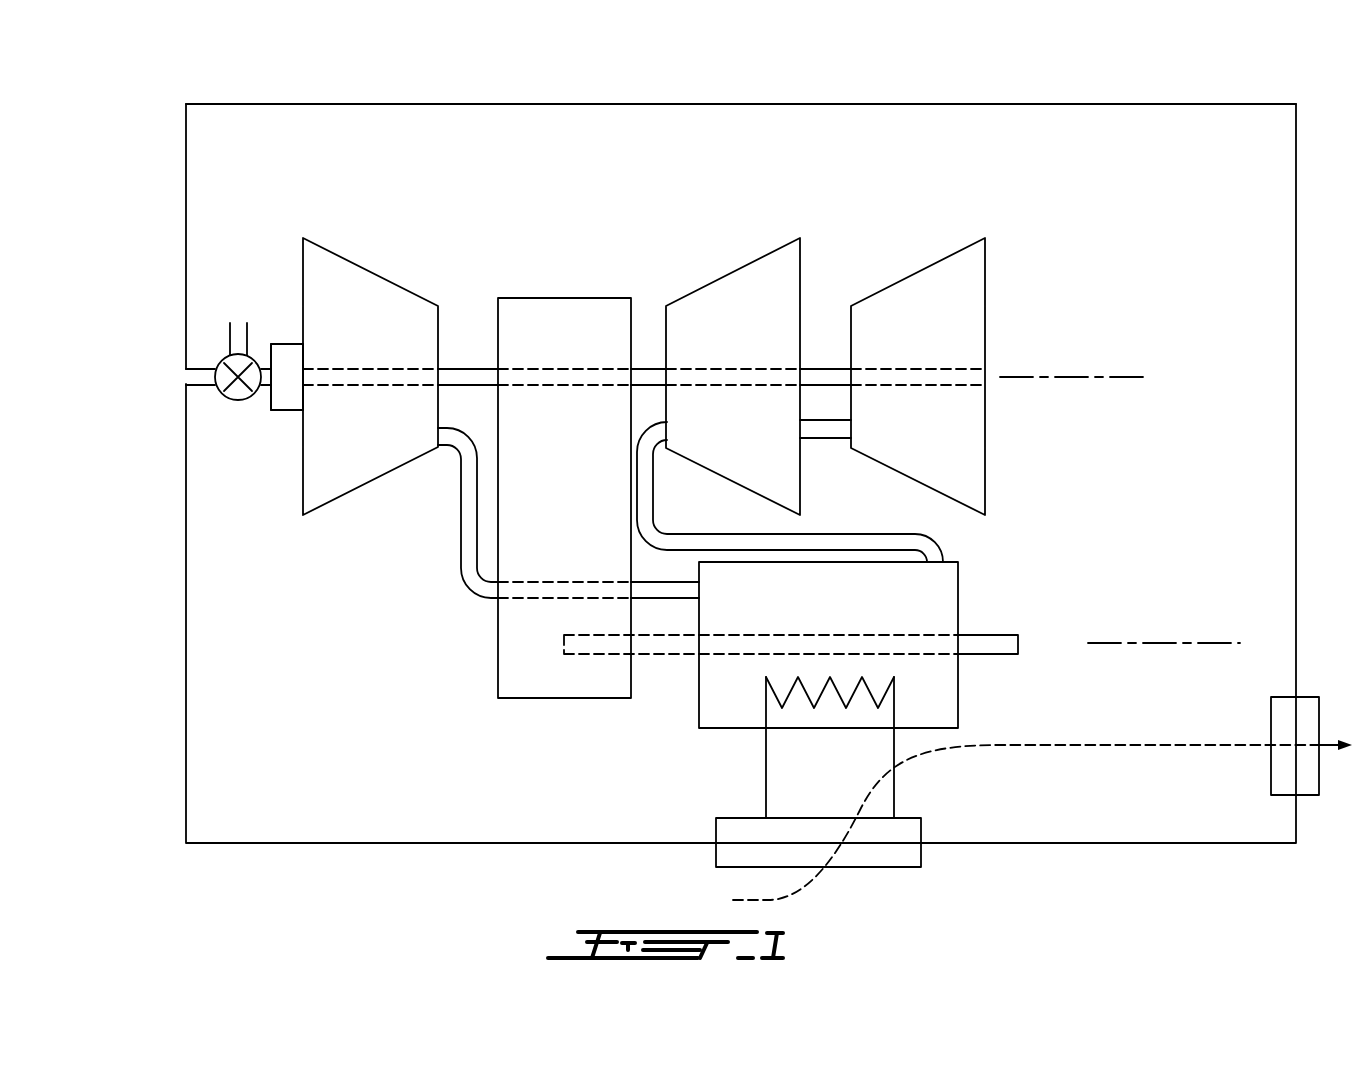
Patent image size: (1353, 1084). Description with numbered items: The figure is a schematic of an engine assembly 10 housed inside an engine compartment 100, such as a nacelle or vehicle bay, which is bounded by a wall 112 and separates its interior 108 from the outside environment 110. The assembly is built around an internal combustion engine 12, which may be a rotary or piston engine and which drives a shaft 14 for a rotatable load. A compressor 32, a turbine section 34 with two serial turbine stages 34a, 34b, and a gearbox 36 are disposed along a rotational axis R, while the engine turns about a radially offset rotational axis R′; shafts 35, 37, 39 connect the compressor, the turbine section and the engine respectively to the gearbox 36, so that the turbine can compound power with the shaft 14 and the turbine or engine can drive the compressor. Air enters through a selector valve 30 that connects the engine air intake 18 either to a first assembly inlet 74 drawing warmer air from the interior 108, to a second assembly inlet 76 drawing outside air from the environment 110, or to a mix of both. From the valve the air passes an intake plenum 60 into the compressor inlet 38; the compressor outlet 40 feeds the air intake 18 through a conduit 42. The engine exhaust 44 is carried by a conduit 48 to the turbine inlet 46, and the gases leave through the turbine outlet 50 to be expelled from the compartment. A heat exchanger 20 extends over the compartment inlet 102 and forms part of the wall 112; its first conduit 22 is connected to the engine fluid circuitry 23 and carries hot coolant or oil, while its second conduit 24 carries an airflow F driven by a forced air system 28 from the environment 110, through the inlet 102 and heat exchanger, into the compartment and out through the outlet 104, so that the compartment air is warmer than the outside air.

The engine assembly 10 is at (982, 68).
The internal combustion engine 12 is at (908, 702).
The shaft 14 is at (1018, 644).
The air intake 18 is at (690, 539).
The heat exchanger 20 is at (908, 818).
The first conduit 22 is at (767, 765).
The fluid circuitry 23 is at (770, 688).
The second conduit 24 is at (696, 893).
The forced air system 28 is at (1285, 697).
The selector valve 30 is at (222, 360).
The compressor 32 is at (342, 257).
The turbine section 34 is at (894, 320).
The turbine stage 34a is at (678, 300).
The turbine stage 34b is at (985, 253).
The shaft 35 is at (480, 368).
The gearbox 36 is at (539, 565).
The shaft 37 is at (812, 367).
The inlet 38 is at (270, 442).
The shaft 39 is at (656, 650).
The outlet 40 is at (585, 284).
The conduit 42 is at (462, 545).
The exhaust 44 is at (892, 626).
The inlet 46 is at (720, 422).
The conduit 48 is at (841, 531).
The outlet 50 is at (1034, 444).
The intake plenum 60 is at (290, 344).
The first assembly inlet 74 is at (242, 301).
The second assembly inlet 76 is at (120, 393).
The engine compartment 100 is at (186, 150).
The inlet 102 is at (943, 889).
The outlet 104 is at (1243, 764).
The interior 108 is at (292, 813).
The environment 110 is at (457, 80).
The wall 112 is at (1128, 103).
The airflow F is at (1108, 748).
The rotational axis R is at (1085, 378).
The rotational axis R′ is at (1173, 645).